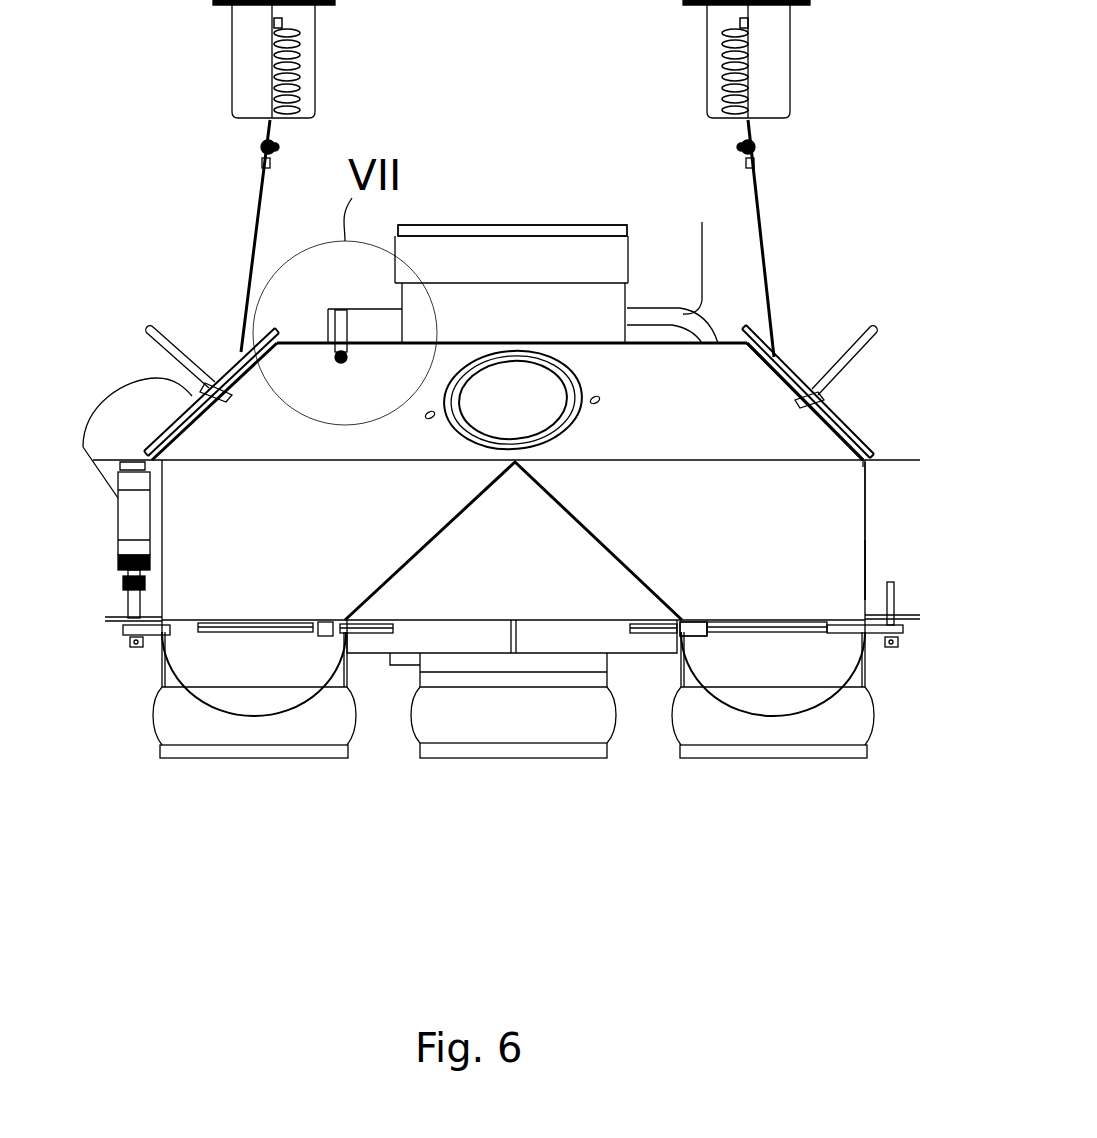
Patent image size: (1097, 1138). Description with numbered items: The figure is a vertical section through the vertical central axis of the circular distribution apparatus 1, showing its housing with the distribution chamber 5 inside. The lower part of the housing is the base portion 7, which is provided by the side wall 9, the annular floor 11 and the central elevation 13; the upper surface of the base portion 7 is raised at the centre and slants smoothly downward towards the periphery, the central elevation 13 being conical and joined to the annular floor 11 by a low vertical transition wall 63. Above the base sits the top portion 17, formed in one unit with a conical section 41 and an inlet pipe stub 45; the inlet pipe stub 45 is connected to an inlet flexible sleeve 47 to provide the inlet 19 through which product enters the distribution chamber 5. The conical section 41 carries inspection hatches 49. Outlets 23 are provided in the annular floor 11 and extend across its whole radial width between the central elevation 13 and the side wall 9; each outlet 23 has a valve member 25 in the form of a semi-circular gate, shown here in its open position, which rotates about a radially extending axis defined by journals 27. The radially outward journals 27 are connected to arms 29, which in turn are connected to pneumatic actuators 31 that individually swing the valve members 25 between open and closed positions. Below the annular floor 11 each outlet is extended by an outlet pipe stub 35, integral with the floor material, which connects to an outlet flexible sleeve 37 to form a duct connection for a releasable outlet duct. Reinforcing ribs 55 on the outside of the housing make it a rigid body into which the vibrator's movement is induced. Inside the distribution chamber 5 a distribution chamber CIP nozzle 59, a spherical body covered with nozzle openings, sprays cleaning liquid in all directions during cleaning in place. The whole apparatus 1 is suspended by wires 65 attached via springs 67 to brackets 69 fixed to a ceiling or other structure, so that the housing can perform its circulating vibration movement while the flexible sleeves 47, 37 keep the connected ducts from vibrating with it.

The circular distribution apparatus 1 is at (168, 193).
The distribution chamber 5 is at (262, 545).
The base portion 7 is at (867, 512).
The side wall 9 is at (866, 545).
The annular floor 11 is at (840, 627).
The central elevation 13 is at (600, 533).
The top portion 17 is at (725, 338).
The inlet 19 is at (513, 186).
The outlets 23 is at (268, 772).
The valve member 25 is at (215, 707).
The journals 27 is at (125, 630).
The arms 29 is at (120, 604).
The pneumatic actuators 31 is at (118, 515).
The outlet pipe stub 35 is at (160, 652).
The outlet flexible sleeve 37 is at (153, 733).
The conical section 41 is at (722, 421).
The inlet pipe stub 45 is at (699, 254).
The inlet flexible sleeve 47 is at (628, 256).
The inspection hatches 49 is at (842, 420).
The reinforcing ribs 55 is at (683, 312).
The distribution chamber CIP nozzle 59 is at (335, 353).
The transition wall 63 is at (680, 630).
The wires 65 is at (762, 198).
The springs 67 is at (748, 45).
The brackets 69 is at (790, 88).